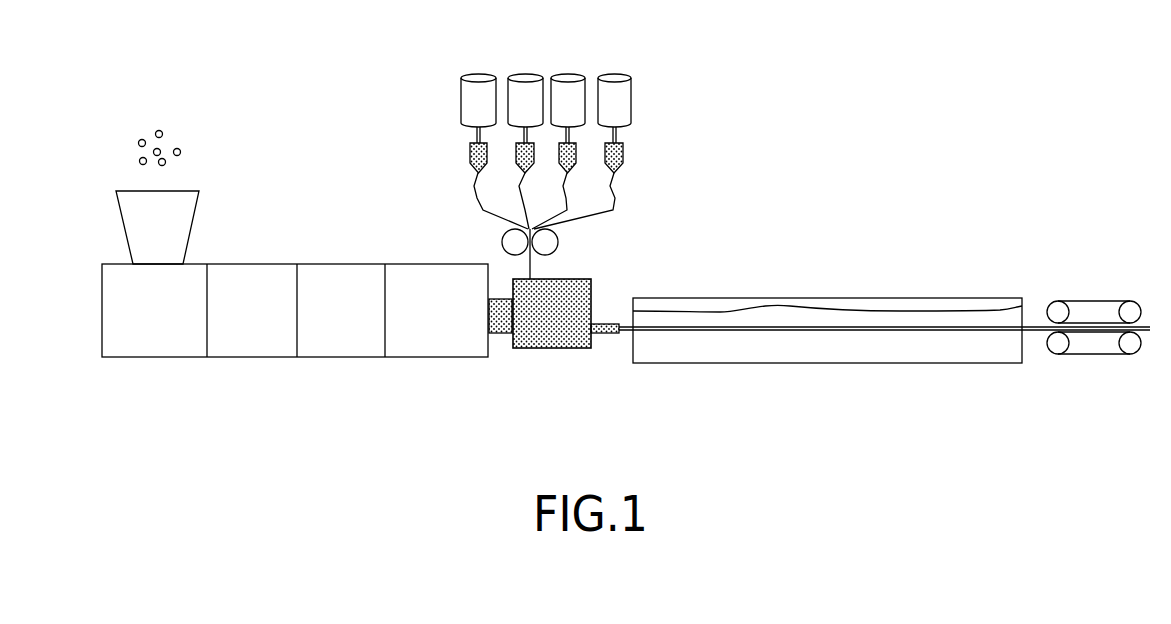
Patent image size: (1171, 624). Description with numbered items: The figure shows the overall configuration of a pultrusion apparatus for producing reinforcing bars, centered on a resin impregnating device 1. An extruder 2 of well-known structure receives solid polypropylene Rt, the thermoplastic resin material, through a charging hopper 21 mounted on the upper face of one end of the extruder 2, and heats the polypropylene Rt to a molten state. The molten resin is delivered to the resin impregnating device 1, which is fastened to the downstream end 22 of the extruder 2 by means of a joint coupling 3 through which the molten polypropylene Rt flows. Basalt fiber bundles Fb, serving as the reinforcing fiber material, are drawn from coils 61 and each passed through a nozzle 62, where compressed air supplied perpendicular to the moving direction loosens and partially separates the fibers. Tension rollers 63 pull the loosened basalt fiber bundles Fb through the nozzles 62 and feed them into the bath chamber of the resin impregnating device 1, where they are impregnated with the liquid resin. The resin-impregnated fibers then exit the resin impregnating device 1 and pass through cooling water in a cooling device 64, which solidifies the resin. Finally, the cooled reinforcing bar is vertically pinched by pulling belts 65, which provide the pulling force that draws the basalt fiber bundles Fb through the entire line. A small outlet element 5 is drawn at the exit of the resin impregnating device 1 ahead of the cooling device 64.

The resin impregnating device 1 is at (545, 349).
The extruder 2 is at (295, 310).
The joint coupling 3 is at (505, 298).
The outlet 5 is at (605, 336).
The charging hopper 21 is at (124, 223).
The downstream end 22 is at (455, 335).
The coils 61 is at (477, 78).
The nozzle 62 is at (469, 155).
The tension rollers 63 is at (559, 243).
The cooling device 64 is at (809, 298).
The pulling belts 65 is at (1088, 300).
The polypropylene Rt is at (168, 141).
The basalt fiber bundles Fb is at (472, 136).